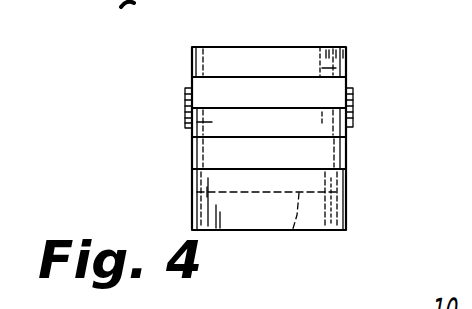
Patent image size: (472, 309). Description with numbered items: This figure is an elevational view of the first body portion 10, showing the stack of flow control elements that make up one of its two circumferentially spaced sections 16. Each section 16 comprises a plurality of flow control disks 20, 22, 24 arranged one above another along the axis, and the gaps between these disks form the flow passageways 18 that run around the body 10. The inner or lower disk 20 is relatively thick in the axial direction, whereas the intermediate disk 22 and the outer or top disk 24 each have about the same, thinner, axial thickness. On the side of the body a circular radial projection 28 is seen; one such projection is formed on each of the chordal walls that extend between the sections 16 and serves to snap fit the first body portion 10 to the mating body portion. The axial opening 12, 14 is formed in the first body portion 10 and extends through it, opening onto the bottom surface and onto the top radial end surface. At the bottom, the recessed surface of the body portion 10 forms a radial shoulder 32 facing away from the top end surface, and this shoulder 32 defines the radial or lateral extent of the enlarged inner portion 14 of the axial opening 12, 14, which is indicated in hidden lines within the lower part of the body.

The first body portion 10 is at (305, 115).
The axial opening 12 is at (301, 38).
The enlarged inner portion of the axial opening 14 is at (301, 230).
The flow control section 16 is at (314, 196).
The flow passageway 18 is at (362, 102).
The inner flow control disk 20 is at (269, 259).
The intermediate flow control disk 22 is at (226, 147).
The outer flow control disk 24 is at (229, 67).
The circular radial projection 28 is at (151, 112).
The radial shoulder 32 is at (311, 246).